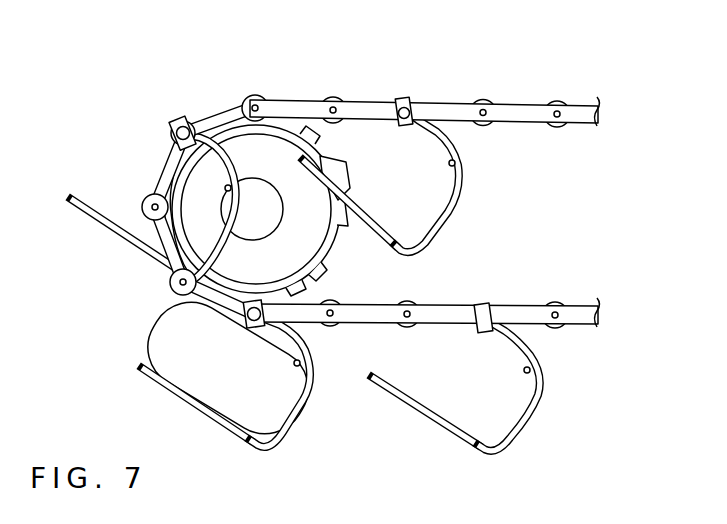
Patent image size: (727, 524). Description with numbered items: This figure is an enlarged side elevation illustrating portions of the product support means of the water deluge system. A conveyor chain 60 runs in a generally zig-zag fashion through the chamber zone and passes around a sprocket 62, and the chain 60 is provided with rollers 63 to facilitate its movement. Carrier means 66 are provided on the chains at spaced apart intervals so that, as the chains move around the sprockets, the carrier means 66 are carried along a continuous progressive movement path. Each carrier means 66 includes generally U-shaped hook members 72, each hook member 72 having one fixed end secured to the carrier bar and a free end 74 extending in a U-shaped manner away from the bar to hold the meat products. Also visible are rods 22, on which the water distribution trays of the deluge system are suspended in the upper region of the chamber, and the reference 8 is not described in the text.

The tool holder mechanism 8 is at (384, 78).
The rod 22 is at (446, 128).
The conveyor chain 60 is at (579, 100).
The sprocket 62 is at (279, 152).
The roller 63 is at (558, 306).
The carrier means 66 is at (480, 186).
The hook member 72 is at (220, 104).
The free end 74 is at (77, 182).